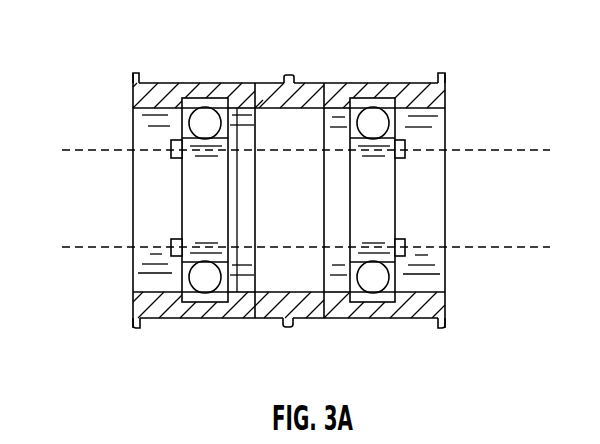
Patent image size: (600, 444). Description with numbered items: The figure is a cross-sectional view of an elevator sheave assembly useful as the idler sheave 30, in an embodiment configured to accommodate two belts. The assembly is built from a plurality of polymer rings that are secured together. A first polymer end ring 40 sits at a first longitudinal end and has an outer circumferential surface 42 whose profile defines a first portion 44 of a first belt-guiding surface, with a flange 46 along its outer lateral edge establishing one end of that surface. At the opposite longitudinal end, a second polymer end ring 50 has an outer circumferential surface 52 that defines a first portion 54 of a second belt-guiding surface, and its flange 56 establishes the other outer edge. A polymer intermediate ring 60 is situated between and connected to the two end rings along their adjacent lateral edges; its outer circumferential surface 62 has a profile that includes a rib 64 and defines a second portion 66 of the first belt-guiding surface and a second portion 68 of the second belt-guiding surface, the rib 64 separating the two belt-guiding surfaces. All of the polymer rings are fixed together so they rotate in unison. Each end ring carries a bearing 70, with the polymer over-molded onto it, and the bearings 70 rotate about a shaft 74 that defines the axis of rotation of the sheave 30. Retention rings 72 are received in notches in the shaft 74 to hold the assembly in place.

The idler sheave 30 is at (289, 194).
The first polymer end ring 40 is at (179, 199).
The outer circumferential surface 42 is at (165, 318).
The first portion of first belt-guiding surface 44 is at (186, 83).
The flange 46 is at (136, 73).
The second polymer end ring 50 is at (409, 203).
The outer circumferential surface 52 is at (398, 318).
The first portion of second belt-guiding surface 54 is at (391, 83).
The flange 56 is at (446, 73).
The polymer intermediate ring 60 is at (280, 199).
The outer circumferential surface 62 is at (310, 318).
The rib 64 is at (289, 75).
The second portion of first belt-guiding surface 66 is at (265, 83).
The second portion of second belt-guiding surface 68 is at (315, 83).
The bearing 70 is at (195, 196).
The retention ring 72 is at (171, 148).
The shaft 74 is at (523, 150).